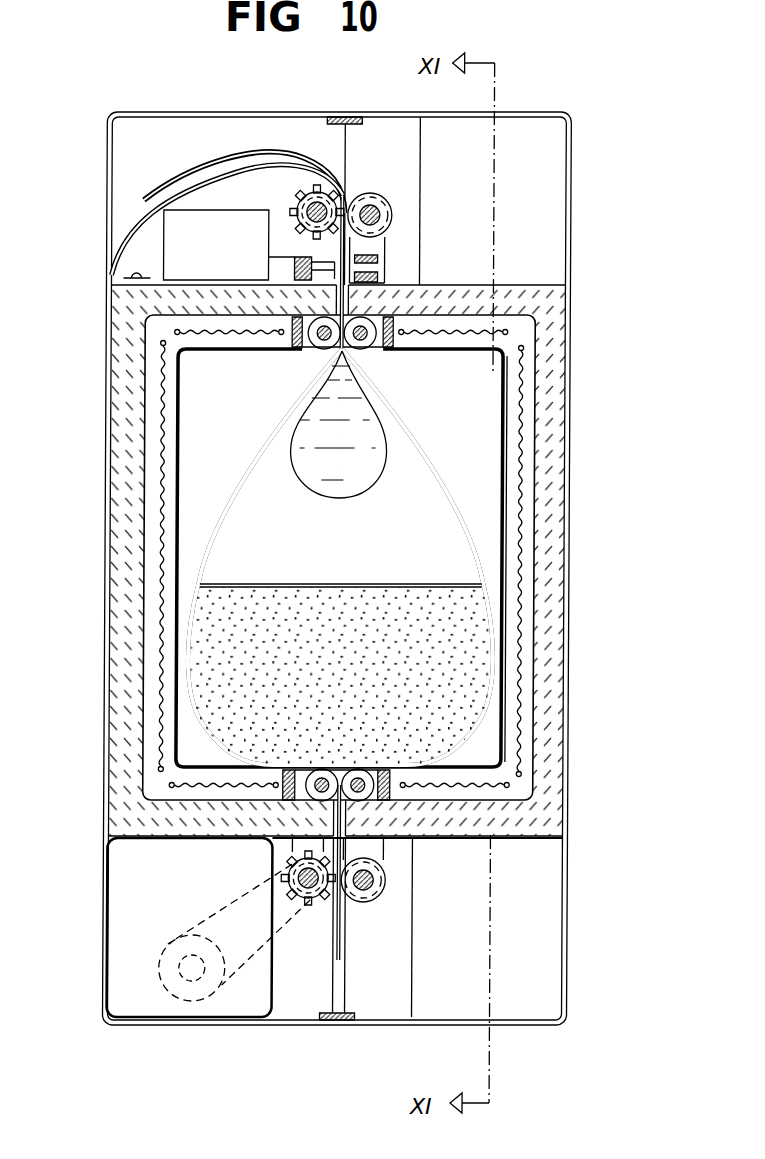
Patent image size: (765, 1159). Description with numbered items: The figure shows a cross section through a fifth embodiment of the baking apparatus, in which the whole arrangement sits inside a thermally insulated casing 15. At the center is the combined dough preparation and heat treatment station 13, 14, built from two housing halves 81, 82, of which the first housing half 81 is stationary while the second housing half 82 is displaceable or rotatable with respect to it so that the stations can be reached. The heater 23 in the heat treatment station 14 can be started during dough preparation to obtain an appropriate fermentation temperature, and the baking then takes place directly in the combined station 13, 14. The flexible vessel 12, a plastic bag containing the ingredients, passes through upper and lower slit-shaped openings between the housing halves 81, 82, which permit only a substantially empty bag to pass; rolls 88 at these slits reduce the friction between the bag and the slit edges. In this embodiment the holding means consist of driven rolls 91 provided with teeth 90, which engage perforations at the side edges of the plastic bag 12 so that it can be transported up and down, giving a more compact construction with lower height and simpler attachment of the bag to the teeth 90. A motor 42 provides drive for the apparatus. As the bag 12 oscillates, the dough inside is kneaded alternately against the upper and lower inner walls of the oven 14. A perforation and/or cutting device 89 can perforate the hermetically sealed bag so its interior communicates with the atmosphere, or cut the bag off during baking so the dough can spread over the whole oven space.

The flexible vessel 12 is at (189, 168).
The dough preparation station 13 is at (484, 395).
The heat treatment station 14 is at (407, 560).
The thermally insulated casing 15 is at (548, 618).
The heater 23 is at (525, 453).
The motor 42 is at (138, 877).
The first housing half 81 is at (130, 540).
The second housing half 82 is at (555, 527).
The rolls 88 is at (318, 345).
The perforation and/or cutting device 89 is at (386, 270).
The teeth 90 is at (294, 206).
The driven rolls 91 is at (350, 200).